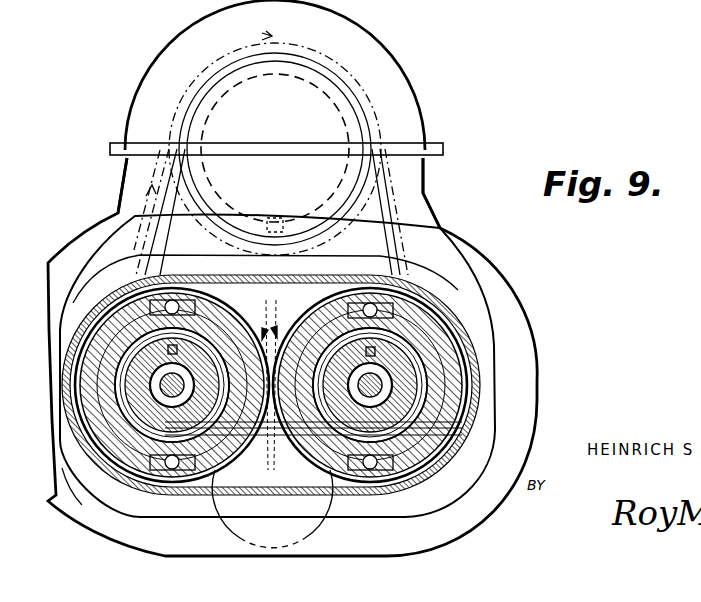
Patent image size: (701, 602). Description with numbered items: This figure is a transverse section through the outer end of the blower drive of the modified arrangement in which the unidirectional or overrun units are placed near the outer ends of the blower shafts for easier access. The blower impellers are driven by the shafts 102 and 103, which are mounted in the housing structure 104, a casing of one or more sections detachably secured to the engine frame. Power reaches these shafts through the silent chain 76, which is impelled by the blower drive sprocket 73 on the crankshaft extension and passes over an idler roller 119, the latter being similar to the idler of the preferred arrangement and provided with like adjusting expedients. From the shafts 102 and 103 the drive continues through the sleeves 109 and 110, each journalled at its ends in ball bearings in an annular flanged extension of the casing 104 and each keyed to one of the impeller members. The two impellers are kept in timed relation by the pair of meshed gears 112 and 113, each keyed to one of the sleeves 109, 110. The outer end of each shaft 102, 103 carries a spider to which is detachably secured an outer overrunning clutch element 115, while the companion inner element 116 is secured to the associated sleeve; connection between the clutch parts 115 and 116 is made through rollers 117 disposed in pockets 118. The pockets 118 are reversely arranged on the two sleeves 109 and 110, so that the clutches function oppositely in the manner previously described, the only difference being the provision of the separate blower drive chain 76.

The sprocket 73 is at (350, 117).
The chain 76 is at (438, 232).
The shaft 102 is at (80, 483).
The shaft 103 is at (378, 388).
The housing structure 104 is at (507, 297).
The sleeve 109 is at (188, 345).
The sleeve 110 is at (420, 370).
The meshed gear 112 is at (262, 340).
The meshed gear 113 is at (277, 338).
The outer overrunning clutch element 115 is at (437, 327).
The inner overrunning clutch element 116 is at (108, 330).
The rollers 117 is at (140, 280).
The pockets 118 is at (120, 288).
The idler roller 119 is at (295, 537).